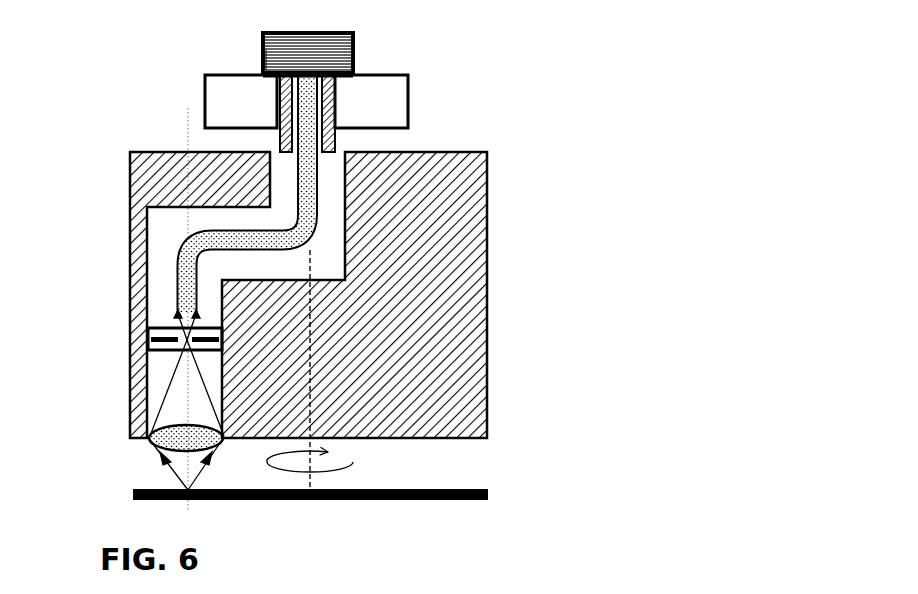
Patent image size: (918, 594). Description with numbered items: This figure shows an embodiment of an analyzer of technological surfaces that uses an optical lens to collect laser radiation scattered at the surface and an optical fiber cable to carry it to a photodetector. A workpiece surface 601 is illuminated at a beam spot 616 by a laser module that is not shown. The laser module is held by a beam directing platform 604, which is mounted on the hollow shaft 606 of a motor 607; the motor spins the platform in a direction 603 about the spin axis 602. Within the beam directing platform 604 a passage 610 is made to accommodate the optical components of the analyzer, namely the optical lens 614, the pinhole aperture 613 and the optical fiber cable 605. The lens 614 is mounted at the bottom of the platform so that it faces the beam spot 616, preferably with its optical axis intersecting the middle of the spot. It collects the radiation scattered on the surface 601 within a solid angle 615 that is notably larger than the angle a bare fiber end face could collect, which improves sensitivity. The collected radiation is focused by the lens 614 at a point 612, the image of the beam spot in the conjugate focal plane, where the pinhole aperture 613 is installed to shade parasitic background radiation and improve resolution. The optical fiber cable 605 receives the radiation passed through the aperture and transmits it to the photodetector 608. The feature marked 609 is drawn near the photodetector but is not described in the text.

The workpiece surface 601 is at (491, 500).
The spin axis 602 is at (319, 257).
The direction 603 is at (359, 462).
The beam directing platform 604 is at (126, 180).
The optical fiber cable 605 is at (321, 202).
The hollow shaft 606 is at (339, 135).
The motor 607 is at (412, 100).
The photodetector 608 is at (358, 53).
The optical fiber input 609 is at (266, 58).
The passage 610 is at (163, 218).
The point 612 is at (175, 329).
The pinhole aperture 613 is at (145, 340).
The optical lens 614 is at (184, 423).
The solid angle 615 is at (162, 456).
The beam spot 616 is at (180, 488).